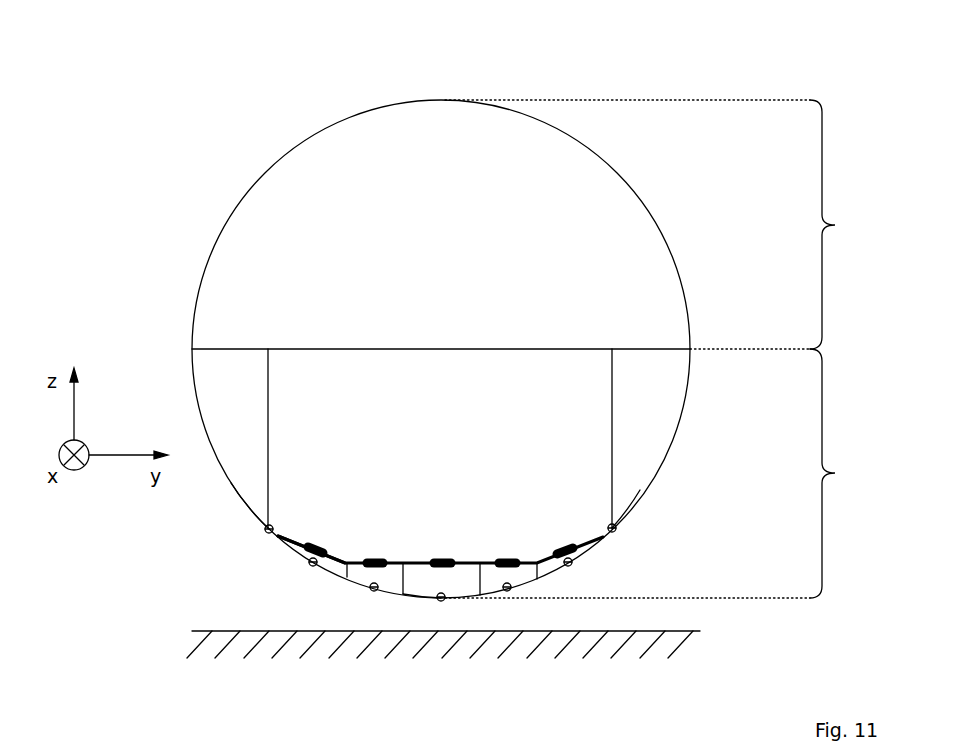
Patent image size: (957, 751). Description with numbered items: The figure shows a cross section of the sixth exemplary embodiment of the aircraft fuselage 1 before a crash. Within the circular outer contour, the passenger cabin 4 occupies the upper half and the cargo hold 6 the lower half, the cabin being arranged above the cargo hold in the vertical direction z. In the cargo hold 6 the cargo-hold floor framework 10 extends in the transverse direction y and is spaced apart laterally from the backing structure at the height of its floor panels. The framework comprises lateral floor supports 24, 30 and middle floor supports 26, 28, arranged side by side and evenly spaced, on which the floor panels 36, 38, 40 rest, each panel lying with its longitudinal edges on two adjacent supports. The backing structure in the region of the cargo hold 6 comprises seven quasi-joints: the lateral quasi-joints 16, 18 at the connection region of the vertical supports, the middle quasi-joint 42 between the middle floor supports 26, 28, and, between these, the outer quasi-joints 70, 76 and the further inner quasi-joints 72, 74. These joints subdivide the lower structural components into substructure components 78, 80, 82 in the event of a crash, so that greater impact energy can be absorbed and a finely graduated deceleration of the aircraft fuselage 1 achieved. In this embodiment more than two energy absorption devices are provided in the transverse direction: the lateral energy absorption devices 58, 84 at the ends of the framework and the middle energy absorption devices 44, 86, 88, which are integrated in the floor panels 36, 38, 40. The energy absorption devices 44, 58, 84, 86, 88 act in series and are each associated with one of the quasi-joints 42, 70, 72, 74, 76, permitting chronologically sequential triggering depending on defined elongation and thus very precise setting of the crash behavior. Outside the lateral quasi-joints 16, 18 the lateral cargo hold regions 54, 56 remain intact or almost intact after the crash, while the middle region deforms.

The aircraft fuselage 1 is at (62, 99).
The passenger cabin 4 is at (837, 224).
The cargo hold 6 is at (837, 473).
The cargo-hold floor framework 10 is at (590, 509).
The lateral quasi-joint 16 is at (267, 533).
The lateral quasi-joint 18 is at (613, 532).
The lateral floor support 24 is at (343, 565).
The middle floor support 26 is at (362, 569).
The middle floor support 28 is at (480, 595).
The lateral floor support 30 is at (537, 579).
The floor panel 36 is at (233, 391).
The floor panel 38 is at (268, 366).
The floor panel 40 is at (299, 343).
The middle quasi-joint 42 is at (441, 601).
The middle energy absorption device 44 is at (460, 562).
The lateral cargo hold region 54 is at (243, 483).
The lateral cargo hold region 56 is at (628, 498).
The lateral energy absorption device 58 is at (320, 555).
The outer quasi-joint 70 is at (311, 566).
The further inner quasi-joint 72 is at (398, 578).
The further inner quasi-joint 74 is at (509, 591).
The outer quasi-joint 76 is at (569, 566).
The substructure component 78 is at (290, 542).
The substructure component 80 is at (372, 591).
The substructure component 82 is at (418, 597).
The lateral energy absorption device 84 is at (578, 555).
The middle energy absorption device 86 is at (390, 562).
The middle energy absorption device 88 is at (522, 562).